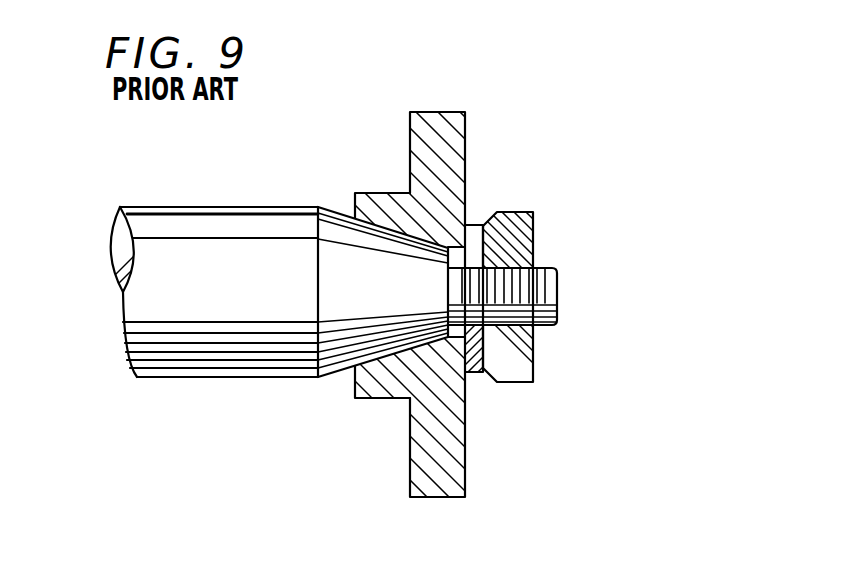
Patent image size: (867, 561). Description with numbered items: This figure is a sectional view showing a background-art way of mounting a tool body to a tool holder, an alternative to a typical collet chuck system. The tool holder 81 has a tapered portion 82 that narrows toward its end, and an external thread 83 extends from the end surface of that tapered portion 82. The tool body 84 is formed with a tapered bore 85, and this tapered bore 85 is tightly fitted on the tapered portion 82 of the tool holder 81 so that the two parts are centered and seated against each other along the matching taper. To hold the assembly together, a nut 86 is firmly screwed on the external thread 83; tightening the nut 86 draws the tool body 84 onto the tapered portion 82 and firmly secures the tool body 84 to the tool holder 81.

The tool holder 81 is at (210, 206).
The tapered portion 82 is at (328, 297).
The external thread 83 is at (557, 305).
The tool body 84 is at (466, 156).
The tapered bore 85 is at (384, 358).
The nut 86 is at (520, 235).